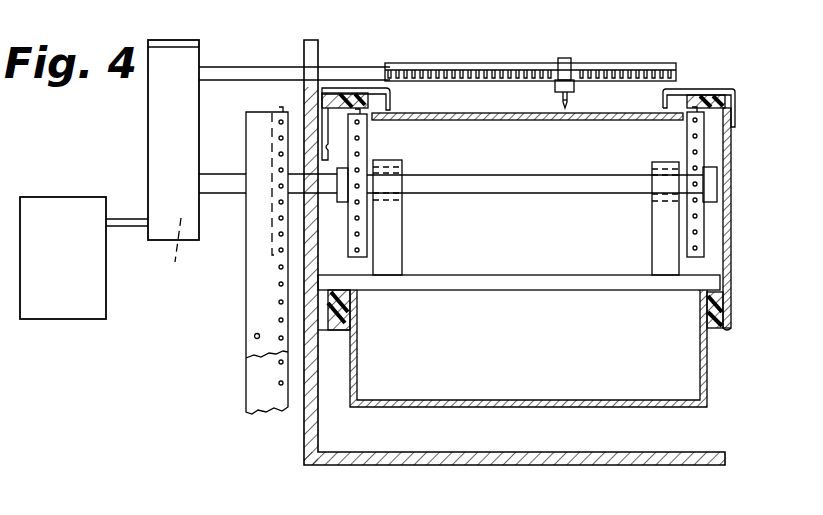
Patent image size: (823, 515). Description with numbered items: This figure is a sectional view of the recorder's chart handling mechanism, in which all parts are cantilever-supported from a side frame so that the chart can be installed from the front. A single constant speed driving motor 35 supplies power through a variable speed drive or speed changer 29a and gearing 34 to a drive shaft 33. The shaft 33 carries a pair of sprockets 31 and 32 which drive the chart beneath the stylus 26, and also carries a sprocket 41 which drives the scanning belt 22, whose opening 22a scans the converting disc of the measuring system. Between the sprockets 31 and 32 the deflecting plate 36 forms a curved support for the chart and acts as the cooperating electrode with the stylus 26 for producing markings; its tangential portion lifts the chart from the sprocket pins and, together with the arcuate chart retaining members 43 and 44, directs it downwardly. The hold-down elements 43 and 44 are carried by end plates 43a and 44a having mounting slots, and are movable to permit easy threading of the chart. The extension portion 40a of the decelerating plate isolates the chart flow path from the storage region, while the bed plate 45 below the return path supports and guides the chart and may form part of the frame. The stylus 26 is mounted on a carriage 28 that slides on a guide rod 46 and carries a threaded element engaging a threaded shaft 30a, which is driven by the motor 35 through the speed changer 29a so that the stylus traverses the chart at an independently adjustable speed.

The scanning belt 22 is at (252, 350).
The opening of the scanning belt 22a is at (254, 335).
The stylus 26 is at (572, 103).
The carriage 28 is at (564, 58).
The variable speed drive (speed changer) 29a is at (165, 176).
The threaded shaft 30a is at (488, 78).
The sprocket 31 is at (685, 137).
The sprocket 32 is at (369, 139).
The shaft 33 is at (237, 180).
The gearing 34 is at (173, 248).
The driving motor 35 is at (46, 240).
The deflecting plate 36 is at (534, 120).
The extension portion of plate 37 40a is at (536, 404).
The sprocket 41 is at (270, 130).
The chart retaining member (hold-down element) 43 is at (351, 103).
The end plate 43a is at (338, 92).
The chart retaining member (hold-down element) 44 is at (707, 95).
The end plate 44a is at (731, 262).
The bed plate (guide plate) 45 is at (605, 460).
The guide rod 46 is at (441, 63).